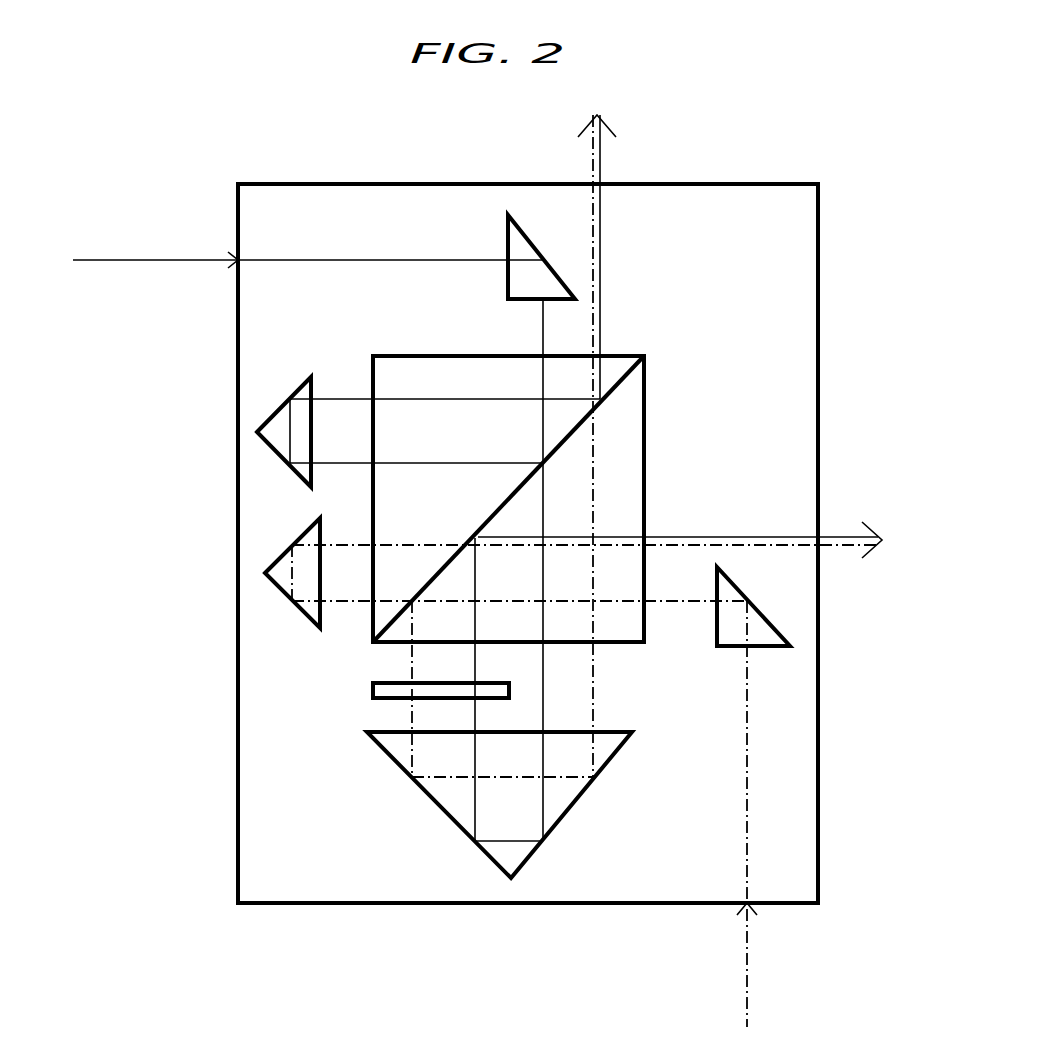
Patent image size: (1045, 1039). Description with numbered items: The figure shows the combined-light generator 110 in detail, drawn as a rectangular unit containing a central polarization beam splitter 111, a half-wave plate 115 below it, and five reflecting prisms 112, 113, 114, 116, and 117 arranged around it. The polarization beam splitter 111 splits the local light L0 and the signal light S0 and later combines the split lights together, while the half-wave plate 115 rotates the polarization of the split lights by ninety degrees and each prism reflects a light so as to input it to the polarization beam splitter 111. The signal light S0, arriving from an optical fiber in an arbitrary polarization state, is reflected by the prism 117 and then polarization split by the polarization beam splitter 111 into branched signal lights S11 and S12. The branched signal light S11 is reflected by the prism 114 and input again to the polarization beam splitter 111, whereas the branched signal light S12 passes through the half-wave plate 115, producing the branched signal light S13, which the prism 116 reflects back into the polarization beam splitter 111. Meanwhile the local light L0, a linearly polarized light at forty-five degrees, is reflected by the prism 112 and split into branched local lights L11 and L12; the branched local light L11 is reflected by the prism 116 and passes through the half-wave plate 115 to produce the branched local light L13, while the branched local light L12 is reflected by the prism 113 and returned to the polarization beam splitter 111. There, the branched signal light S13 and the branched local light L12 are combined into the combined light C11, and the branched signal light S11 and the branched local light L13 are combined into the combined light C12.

The combined-light generator 110 is at (345, 184).
The polarization beam splitter 111 is at (644, 427).
The prism 112 is at (508, 236).
The prism 113 is at (268, 420).
The prism 114 is at (276, 562).
The half-wave plate 115 is at (373, 690).
The prism 116 is at (437, 804).
The prism 117 is at (762, 613).
The local light L0 is at (147, 258).
The branched local light L11 is at (543, 500).
The branched local light L12 is at (420, 465).
The branched local light L13 is at (475, 663).
The combined light C11 is at (627, 160).
The combined light C12 is at (845, 514).
The signal light S0 is at (745, 978).
The branched signal light S11 is at (345, 602).
The branched signal light S12 is at (412, 662).
The branched signal light S13 is at (412, 718).